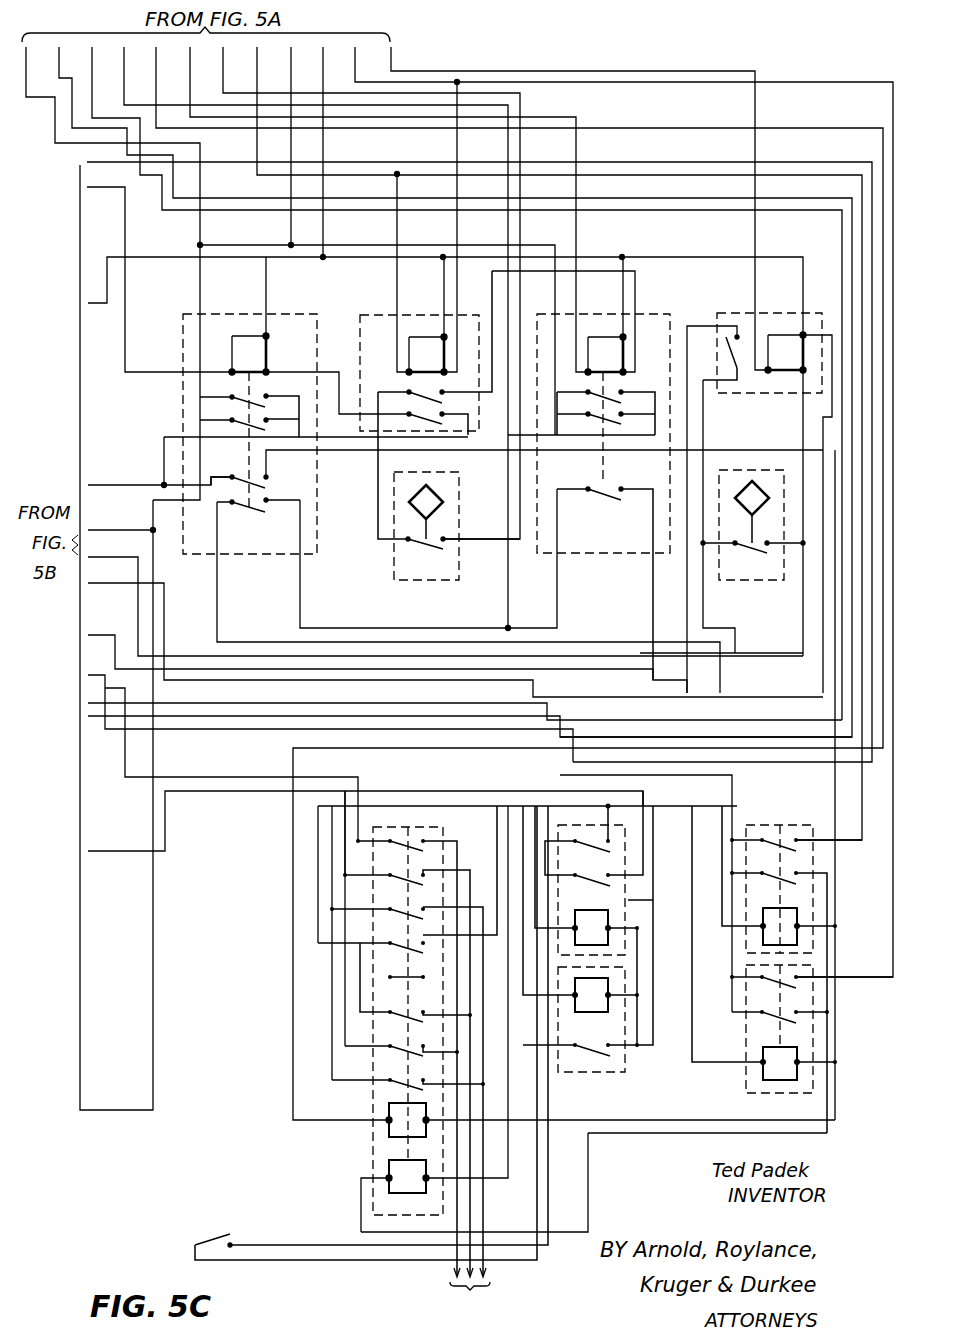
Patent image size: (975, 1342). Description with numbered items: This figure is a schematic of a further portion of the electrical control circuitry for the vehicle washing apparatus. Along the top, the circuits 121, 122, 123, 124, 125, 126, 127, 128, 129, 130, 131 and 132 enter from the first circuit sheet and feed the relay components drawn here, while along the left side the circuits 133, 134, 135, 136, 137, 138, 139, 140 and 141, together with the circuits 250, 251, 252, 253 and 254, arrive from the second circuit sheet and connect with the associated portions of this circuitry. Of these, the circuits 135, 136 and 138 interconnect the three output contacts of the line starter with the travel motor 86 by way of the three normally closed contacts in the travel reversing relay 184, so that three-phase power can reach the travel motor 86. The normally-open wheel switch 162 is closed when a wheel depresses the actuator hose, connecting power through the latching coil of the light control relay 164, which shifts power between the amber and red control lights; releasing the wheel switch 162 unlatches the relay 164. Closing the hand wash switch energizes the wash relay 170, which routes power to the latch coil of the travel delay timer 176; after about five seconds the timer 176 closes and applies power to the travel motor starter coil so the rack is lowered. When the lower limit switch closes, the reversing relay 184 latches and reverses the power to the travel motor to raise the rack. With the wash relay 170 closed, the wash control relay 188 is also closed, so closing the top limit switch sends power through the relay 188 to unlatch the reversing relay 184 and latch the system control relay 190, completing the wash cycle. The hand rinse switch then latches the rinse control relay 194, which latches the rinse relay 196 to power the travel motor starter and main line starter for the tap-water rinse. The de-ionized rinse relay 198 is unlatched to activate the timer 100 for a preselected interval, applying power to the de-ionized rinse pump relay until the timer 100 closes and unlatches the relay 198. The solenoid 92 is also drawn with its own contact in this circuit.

The circuit 121 is at (40, 88).
The circuit 122 is at (76, 80).
The circuit 123 is at (108, 88).
The circuit 124 is at (140, 88).
The circuit 125 is at (172, 88).
The circuit 126 is at (206, 88).
The circuit 127 is at (239, 88).
The circuit 128 is at (274, 88).
The circuit 129 is at (308, 88).
The circuit 130 is at (341, 88).
The circuit 131 is at (374, 88).
The circuit 132 is at (392, 62).
The circuit 133 is at (114, 1110).
The circuit 134 is at (122, 851).
The circuit 135 is at (96, 720).
The circuit 136 is at (167, 706).
The circuit 137 is at (124, 775).
The circuit 138 is at (96, 676).
The circuit 139 is at (104, 636).
The circuit 140 is at (94, 585).
The circuit 141 is at (102, 559).
The circuit 250 is at (102, 532).
The circuit 251 is at (106, 485).
The circuit 252 is at (104, 308).
The circuit 253 is at (108, 192).
The circuit 254 is at (93, 170).
The wheel switch 162 is at (219, 1221).
The light control relay 164 is at (640, 900).
The wash relay 170 is at (286, 314).
The travel delay timer 176 is at (585, 1072).
The travel reversing relay 184 is at (372, 1102).
The wash control relay 188 is at (778, 825).
The system control relay 190 is at (378, 315).
The rinse control relay 194 is at (746, 1086).
The rinse relay 196 is at (654, 314).
The de-ionized rinse relay 198 is at (730, 313).
The solenoid valve 92 is at (430, 580).
The timer 100 is at (748, 580).
The travel motor 86 is at (463, 1298).